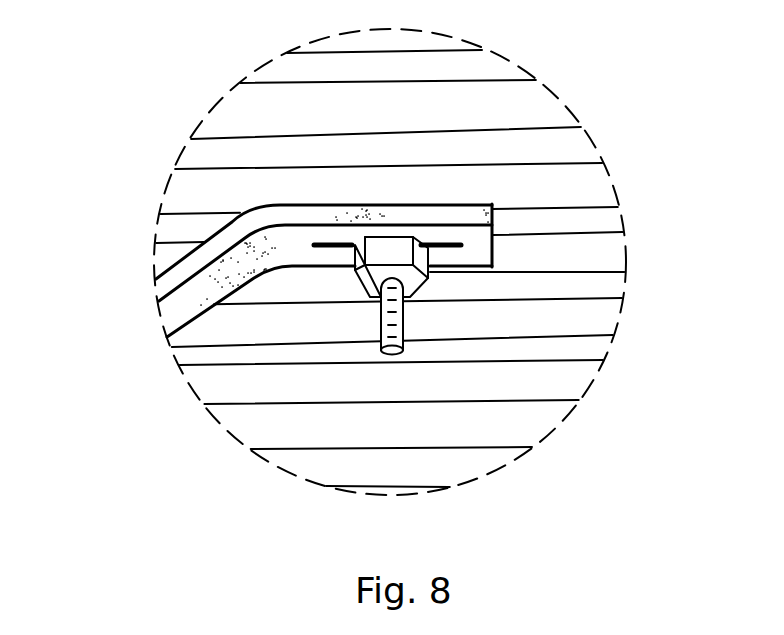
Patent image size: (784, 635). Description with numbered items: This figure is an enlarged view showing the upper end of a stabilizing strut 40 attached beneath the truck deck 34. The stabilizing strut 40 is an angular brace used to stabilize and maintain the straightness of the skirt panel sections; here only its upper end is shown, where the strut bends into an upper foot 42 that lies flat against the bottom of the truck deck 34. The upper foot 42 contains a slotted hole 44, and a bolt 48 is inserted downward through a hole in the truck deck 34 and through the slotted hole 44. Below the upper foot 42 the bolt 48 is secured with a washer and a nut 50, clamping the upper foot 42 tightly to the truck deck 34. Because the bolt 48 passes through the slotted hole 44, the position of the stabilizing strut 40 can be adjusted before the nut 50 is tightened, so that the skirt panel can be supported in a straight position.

The truck deck 34 is at (450, 113).
The stabilizing strut 40 is at (180, 302).
The upper foot 42 is at (478, 243).
The slotted hole 44 is at (333, 250).
The bolt 48 is at (403, 348).
The nut 50 is at (412, 283).